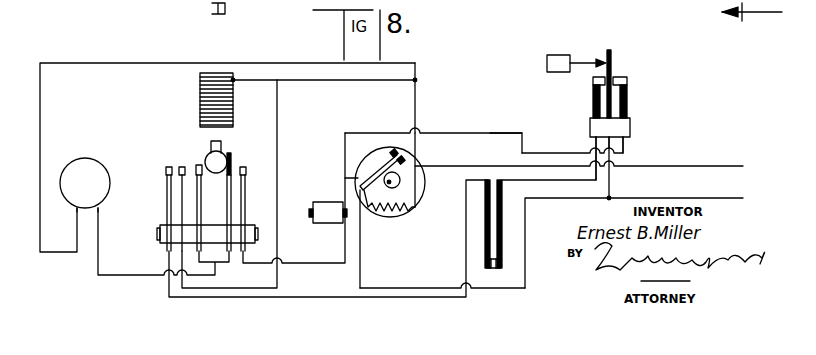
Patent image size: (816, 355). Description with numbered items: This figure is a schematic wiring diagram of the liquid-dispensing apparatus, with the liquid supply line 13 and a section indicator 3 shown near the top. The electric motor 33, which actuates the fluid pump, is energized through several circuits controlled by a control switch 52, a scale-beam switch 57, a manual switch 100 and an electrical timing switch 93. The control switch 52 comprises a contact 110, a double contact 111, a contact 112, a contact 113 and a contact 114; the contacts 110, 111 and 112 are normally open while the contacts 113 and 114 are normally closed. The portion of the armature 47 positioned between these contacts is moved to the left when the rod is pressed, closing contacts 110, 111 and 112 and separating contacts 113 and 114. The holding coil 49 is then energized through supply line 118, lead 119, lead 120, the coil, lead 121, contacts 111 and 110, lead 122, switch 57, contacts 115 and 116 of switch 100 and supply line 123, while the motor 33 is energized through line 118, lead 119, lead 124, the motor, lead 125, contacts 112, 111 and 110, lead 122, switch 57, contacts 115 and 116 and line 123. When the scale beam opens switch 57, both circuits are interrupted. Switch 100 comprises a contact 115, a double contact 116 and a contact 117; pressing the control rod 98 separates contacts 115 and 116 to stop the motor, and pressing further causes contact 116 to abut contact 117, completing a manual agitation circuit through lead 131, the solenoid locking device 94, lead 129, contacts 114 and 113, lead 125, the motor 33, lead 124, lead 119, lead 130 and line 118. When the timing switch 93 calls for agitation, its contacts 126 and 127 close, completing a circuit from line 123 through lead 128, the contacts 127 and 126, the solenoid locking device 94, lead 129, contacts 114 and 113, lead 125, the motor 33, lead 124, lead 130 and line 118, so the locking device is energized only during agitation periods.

The section arrow 3 is at (752, 18).
The liquid supply line 13 is at (212, 8).
The electric motor 33 is at (97, 160).
The armature 47 is at (216, 174).
The holding coil 49 is at (200, 90).
The control switch 52 is at (152, 180).
The switch 57 is at (504, 232).
The electrical timing switch 93 is at (421, 188).
The solenoid locking device 94 is at (322, 202).
The control rod 98 is at (556, 55).
The switch 100 is at (639, 136).
The contact 110 is at (168, 166).
The double contact 111 is at (182, 166).
The contact 112 is at (199, 164).
The contact 113 is at (234, 165).
The contact 114 is at (250, 165).
The contact 115 is at (594, 81).
The double contact 116 is at (612, 77).
The contact 117 is at (627, 80).
The supply line 118 is at (692, 166).
The lead 119 is at (416, 93).
The lead 120 is at (350, 80).
The lead 121 is at (279, 238).
The lead 122 is at (324, 297).
The supply line 123 is at (651, 198).
The lead 124 is at (115, 63).
The lead 125 is at (128, 275).
The contact 126 is at (395, 151).
The contact 127 is at (416, 150).
The lead 128 is at (416, 288).
The lead 129 is at (302, 264).
The lead 130 is at (494, 153).
The lead 131 is at (503, 133).